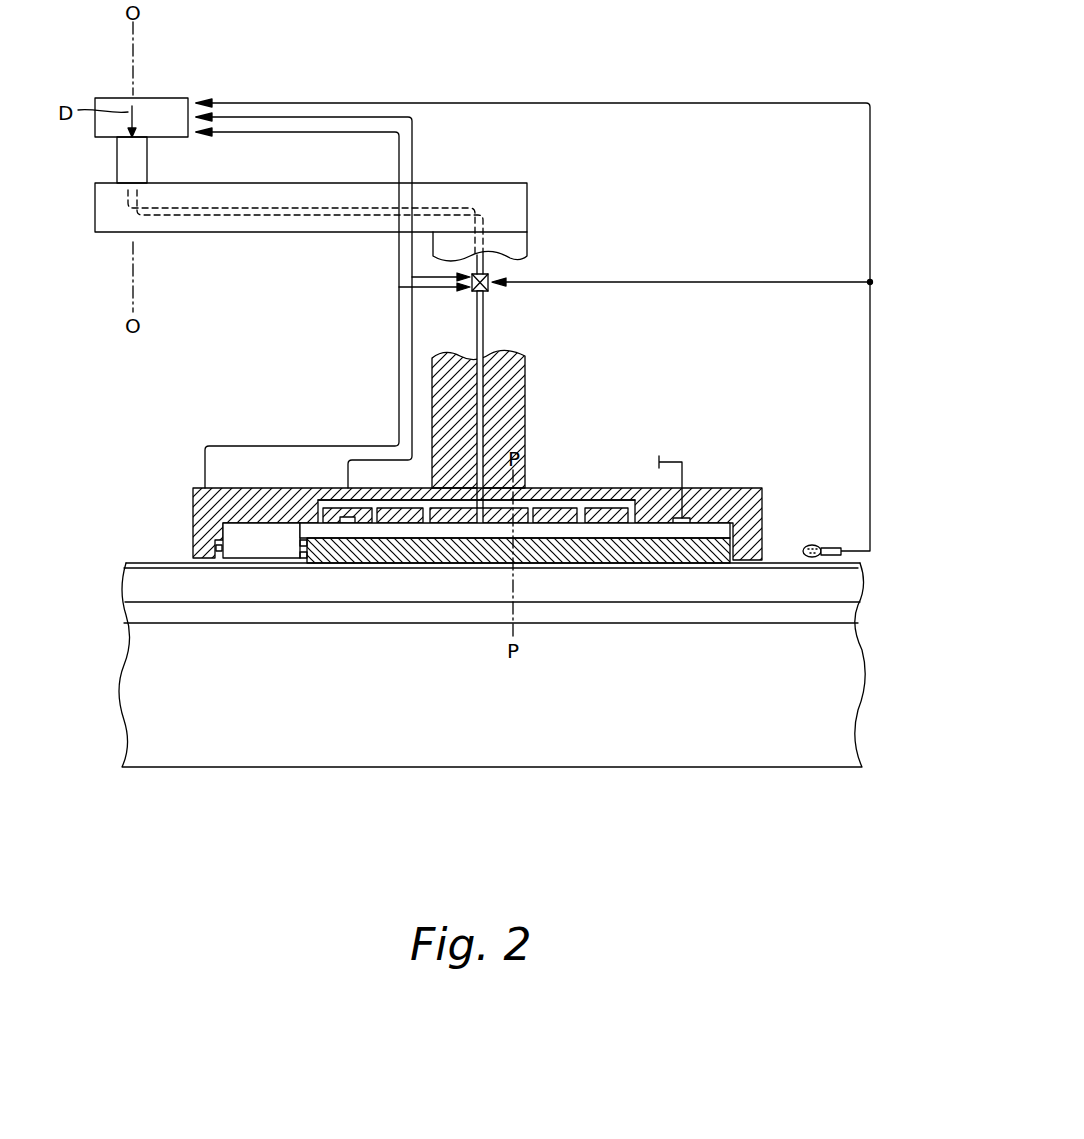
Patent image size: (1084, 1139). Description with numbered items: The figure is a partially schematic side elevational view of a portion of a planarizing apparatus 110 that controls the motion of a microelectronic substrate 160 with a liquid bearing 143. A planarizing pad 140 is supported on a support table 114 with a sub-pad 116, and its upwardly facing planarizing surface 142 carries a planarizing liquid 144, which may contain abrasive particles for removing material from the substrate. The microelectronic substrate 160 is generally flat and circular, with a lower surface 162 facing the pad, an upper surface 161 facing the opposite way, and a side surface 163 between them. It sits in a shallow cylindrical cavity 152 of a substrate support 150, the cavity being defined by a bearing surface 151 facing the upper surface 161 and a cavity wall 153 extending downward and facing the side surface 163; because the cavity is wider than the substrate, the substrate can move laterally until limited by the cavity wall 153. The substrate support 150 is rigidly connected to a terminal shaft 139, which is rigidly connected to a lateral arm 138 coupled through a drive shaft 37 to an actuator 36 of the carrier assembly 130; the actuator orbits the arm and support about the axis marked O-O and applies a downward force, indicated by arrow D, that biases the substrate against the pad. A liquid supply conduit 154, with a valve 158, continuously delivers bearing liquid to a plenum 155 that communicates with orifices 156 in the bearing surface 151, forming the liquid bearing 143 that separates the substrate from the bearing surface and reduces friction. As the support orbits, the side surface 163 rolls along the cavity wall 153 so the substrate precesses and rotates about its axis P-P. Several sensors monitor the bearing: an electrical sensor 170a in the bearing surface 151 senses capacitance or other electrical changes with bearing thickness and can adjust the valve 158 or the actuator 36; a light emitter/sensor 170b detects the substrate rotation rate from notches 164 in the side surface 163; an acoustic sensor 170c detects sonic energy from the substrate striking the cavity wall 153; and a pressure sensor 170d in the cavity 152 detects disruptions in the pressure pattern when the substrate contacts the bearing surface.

The actuator 36 is at (163, 98).
The drive shaft 37 is at (147, 162).
The planarizing apparatus 110 is at (672, 88).
The support table 114 is at (695, 745).
The sub-pad 116 is at (862, 612).
The carrier assembly 130 is at (605, 313).
The lateral arm 138 is at (273, 233).
The terminal shaft 139 is at (527, 390).
The planarizing pad 140 is at (860, 585).
The planarizing surface 142 is at (852, 561).
The liquid bearing 143 is at (318, 500).
The planarizing liquid 144 is at (782, 560).
The substrate support 150 is at (622, 488).
The bearing surface 151 is at (257, 527).
The cavity 152 is at (243, 545).
The cavity wall 153 is at (238, 500).
The liquid supply conduit 154 is at (490, 323).
The plenum 155 is at (545, 500).
The orifices 156 is at (527, 526).
The valve 158 is at (471, 292).
The microelectronic substrate 160 is at (648, 552).
The upper surface 161 is at (713, 497).
The lower surface 162 is at (690, 565).
The side surface 163 is at (300, 550).
The notches 164 is at (283, 540).
The electrical sensor 170a is at (347, 524).
The light emitter/sensor 170b is at (215, 549).
The acoustic sensor 170c is at (815, 545).
The pressure sensor 170d is at (683, 468).